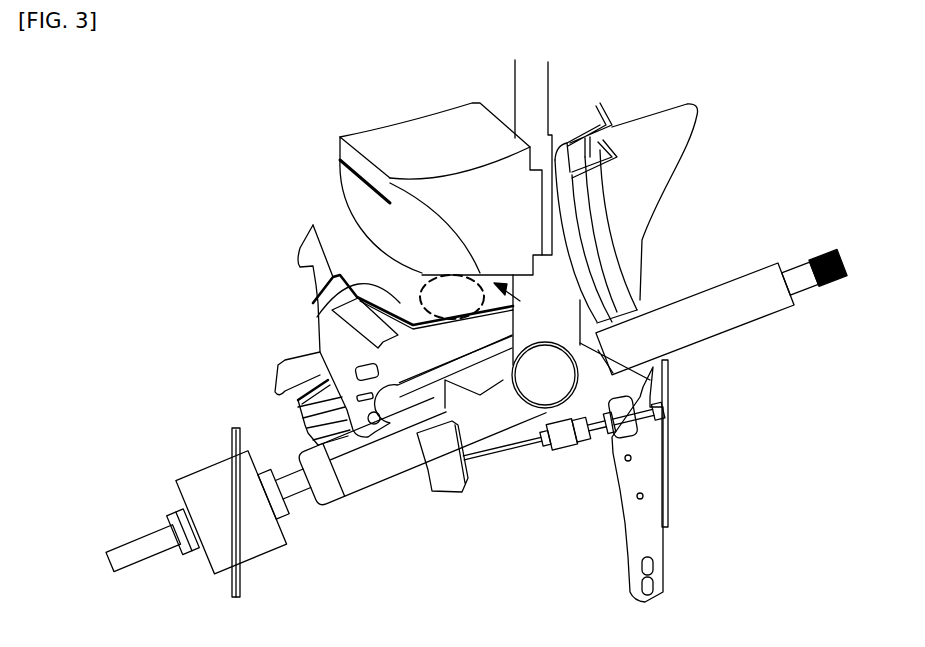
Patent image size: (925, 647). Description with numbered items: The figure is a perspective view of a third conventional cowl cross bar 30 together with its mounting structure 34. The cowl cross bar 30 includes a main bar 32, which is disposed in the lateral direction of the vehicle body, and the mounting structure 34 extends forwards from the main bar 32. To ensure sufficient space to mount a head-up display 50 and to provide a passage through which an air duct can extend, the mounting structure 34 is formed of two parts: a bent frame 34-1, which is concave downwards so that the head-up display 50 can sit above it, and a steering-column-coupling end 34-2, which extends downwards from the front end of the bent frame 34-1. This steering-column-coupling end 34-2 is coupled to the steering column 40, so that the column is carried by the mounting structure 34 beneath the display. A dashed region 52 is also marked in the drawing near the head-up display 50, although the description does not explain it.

The cowl cross bar 30 is at (392, 178).
The main bar 32 is at (553, 333).
The mounting structure 34 is at (320, 335).
The bent frame 34-1 is at (317, 320).
The steering-column-coupling end 34-2 is at (363, 418).
The steering column 40 is at (382, 462).
The head-up display 50 is at (432, 143).
The contact region (dashed) 52 is at (483, 312).